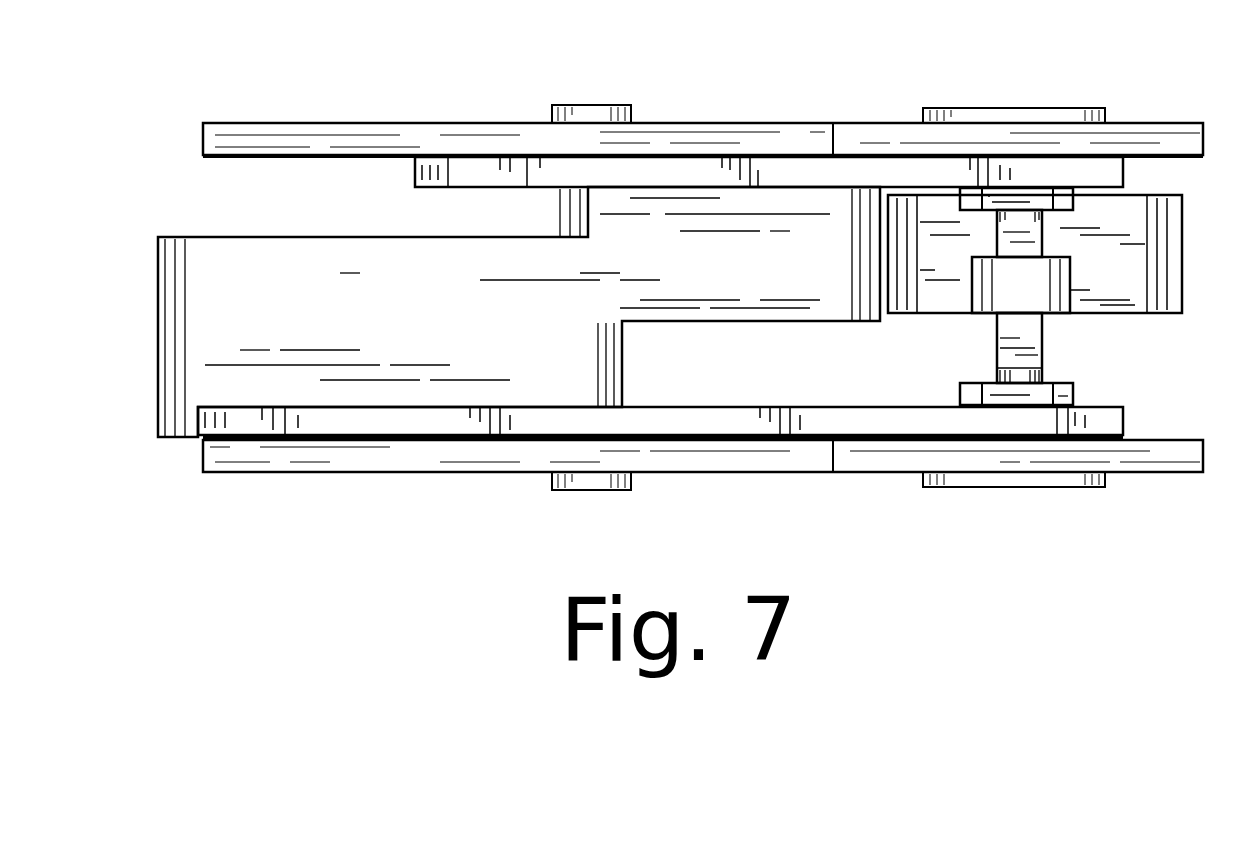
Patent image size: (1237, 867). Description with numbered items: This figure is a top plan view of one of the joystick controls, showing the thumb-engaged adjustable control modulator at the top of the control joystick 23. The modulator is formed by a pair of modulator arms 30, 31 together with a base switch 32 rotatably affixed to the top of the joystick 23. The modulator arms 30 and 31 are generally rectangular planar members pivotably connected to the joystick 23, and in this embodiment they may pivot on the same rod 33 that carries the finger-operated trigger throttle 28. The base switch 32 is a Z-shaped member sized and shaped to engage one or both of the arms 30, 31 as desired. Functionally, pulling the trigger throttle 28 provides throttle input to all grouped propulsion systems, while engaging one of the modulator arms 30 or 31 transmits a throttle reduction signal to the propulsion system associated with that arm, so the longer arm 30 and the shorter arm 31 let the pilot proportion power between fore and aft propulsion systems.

The control joystick 23 is at (763, 128).
The trigger-style throttle member 28 is at (1163, 305).
The modulator arm 30 is at (222, 422).
The modulator arm 31 is at (488, 173).
The base switch 32 is at (745, 312).
The rod 33 is at (997, 345).